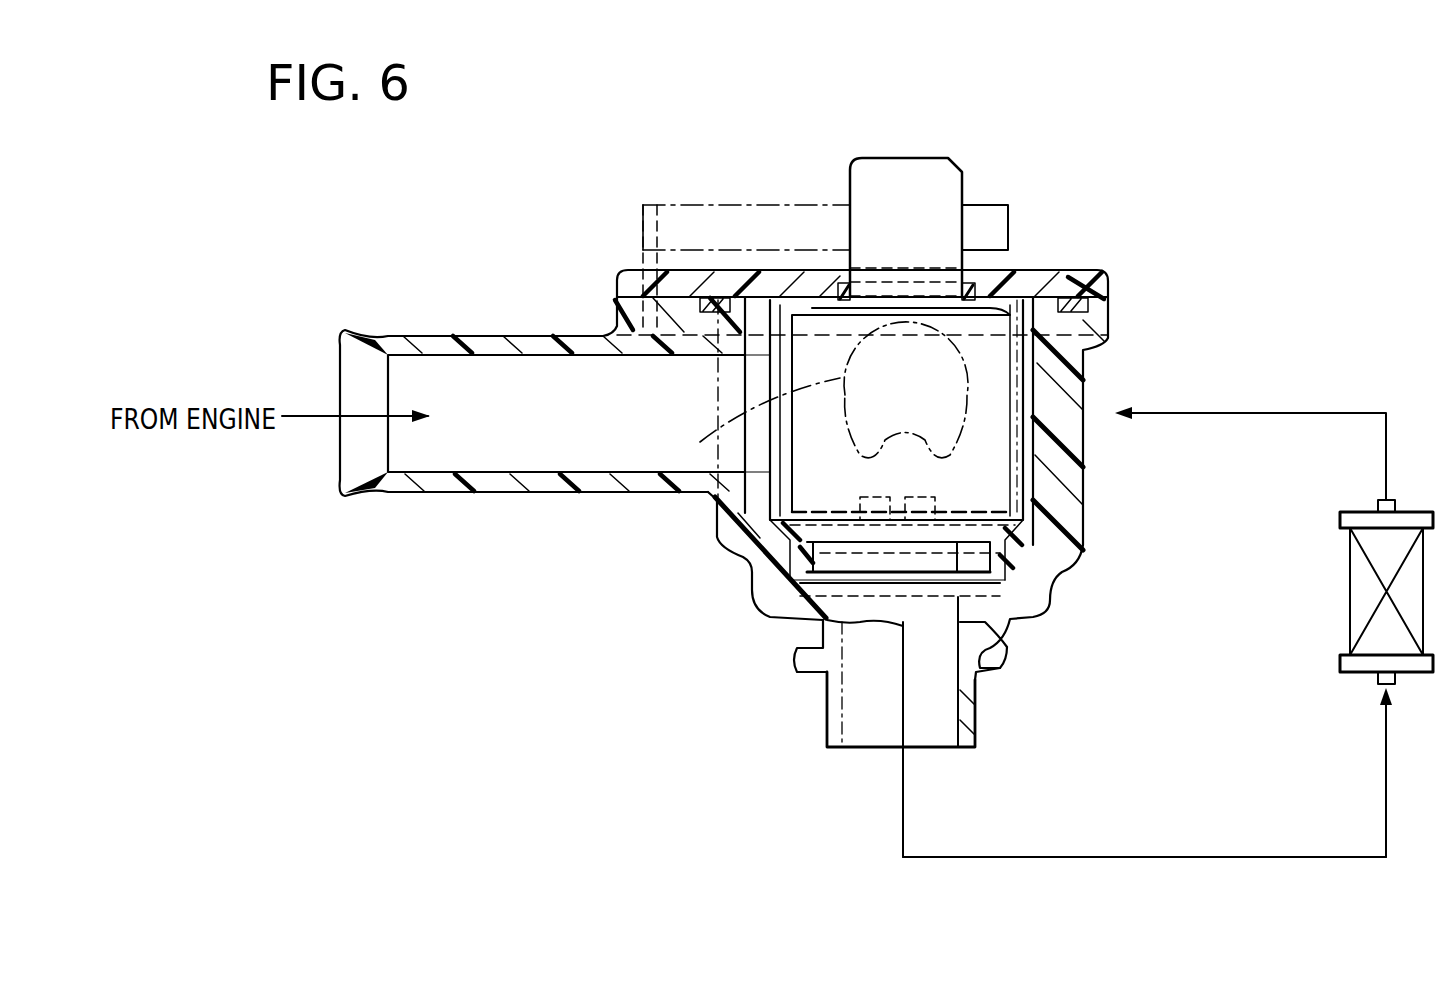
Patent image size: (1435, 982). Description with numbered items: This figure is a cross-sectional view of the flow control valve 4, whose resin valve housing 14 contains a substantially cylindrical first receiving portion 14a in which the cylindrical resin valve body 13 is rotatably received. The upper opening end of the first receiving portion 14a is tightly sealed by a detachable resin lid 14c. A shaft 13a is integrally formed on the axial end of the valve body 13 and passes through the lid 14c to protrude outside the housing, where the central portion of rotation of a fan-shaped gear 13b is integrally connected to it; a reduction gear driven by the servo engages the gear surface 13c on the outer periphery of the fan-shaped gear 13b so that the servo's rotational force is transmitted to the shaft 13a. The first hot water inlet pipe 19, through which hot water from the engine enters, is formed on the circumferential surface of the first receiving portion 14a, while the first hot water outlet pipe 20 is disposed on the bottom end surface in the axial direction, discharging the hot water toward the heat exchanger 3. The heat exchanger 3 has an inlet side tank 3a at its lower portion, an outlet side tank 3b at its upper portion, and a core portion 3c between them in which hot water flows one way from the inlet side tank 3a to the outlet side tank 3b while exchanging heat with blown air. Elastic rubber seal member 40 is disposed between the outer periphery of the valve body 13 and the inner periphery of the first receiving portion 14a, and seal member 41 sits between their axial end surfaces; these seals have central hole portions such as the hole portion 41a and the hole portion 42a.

The heat exchanger 3 is at (1405, 510).
The inlet side tank 3a is at (1362, 665).
The outlet side tank 3b is at (1350, 518).
The core portion 3c is at (1360, 606).
The flow control valve 4 is at (1047, 251).
The valve body 13 is at (815, 277).
The shaft 13a is at (935, 172).
The fan-shaped gear 13b is at (985, 212).
The gear surface 13c is at (650, 204).
The valve housing 14 is at (1078, 562).
The first receiving portion 14a is at (1068, 520).
The lid 14c is at (813, 353).
The first hot water inlet pipe 19 is at (447, 483).
The first hot water outlet pipe 20 is at (965, 704).
The seal member 40 is at (758, 378).
The seal member 41 is at (1025, 548).
The hole portion 41a is at (980, 580).
The hole portion 42a is at (700, 442).